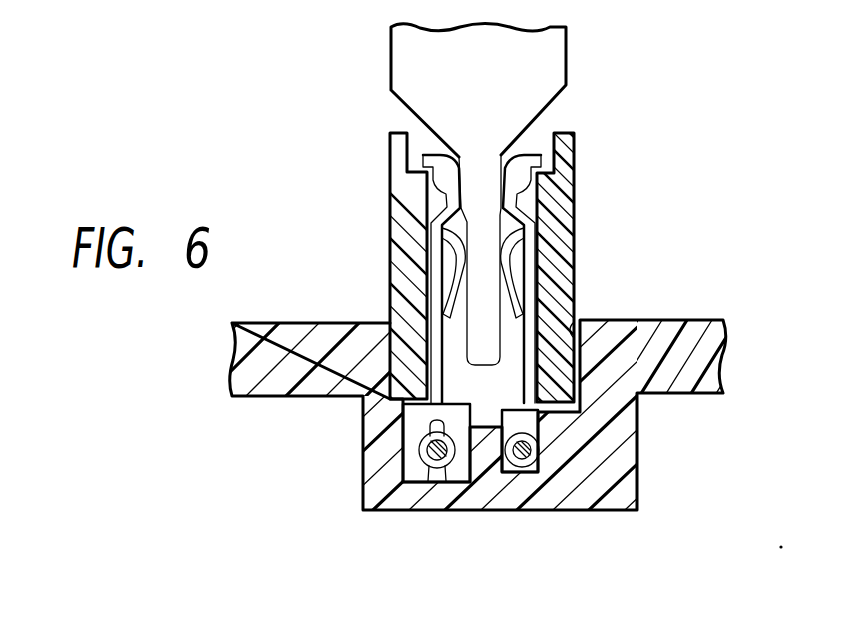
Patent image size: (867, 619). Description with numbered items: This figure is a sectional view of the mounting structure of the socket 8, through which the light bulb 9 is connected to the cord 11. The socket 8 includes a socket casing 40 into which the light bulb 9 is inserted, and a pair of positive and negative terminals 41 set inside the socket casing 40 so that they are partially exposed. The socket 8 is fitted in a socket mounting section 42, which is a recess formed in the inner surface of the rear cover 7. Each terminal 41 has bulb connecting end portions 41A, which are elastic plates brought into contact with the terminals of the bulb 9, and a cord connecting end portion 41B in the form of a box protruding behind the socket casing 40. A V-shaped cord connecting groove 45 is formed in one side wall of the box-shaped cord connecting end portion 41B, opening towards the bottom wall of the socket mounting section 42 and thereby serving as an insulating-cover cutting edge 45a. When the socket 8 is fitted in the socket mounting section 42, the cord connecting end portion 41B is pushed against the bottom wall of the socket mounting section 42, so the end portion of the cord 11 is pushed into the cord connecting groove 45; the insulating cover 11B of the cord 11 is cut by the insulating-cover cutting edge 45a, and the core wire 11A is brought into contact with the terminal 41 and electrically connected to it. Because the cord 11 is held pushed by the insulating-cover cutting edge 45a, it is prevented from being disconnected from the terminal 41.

The rear cover 7 is at (692, 385).
The socket 8 is at (609, 233).
The light bulb 9 is at (558, 58).
The cord 11 is at (498, 509).
The core wire 11A is at (455, 450).
The insulating cover 11B is at (488, 467).
The socket casing 40 is at (567, 195).
The terminal 41 is at (421, 136).
The bulb connecting end portion 41A is at (433, 285).
The cord connecting end portion 41B is at (412, 433).
The socket mounting section 42 is at (573, 317).
The cord connecting groove 45 is at (438, 478).
The insulating-cover cutting edge 45a is at (435, 478).